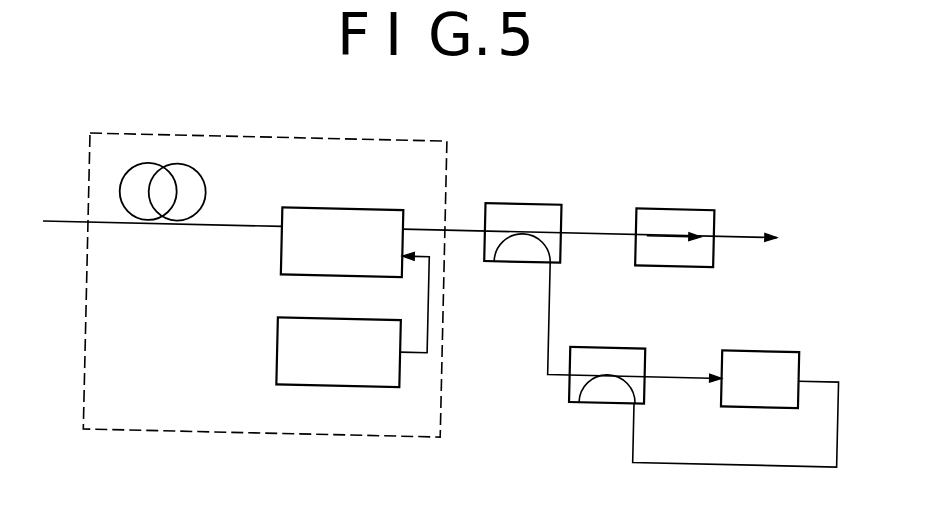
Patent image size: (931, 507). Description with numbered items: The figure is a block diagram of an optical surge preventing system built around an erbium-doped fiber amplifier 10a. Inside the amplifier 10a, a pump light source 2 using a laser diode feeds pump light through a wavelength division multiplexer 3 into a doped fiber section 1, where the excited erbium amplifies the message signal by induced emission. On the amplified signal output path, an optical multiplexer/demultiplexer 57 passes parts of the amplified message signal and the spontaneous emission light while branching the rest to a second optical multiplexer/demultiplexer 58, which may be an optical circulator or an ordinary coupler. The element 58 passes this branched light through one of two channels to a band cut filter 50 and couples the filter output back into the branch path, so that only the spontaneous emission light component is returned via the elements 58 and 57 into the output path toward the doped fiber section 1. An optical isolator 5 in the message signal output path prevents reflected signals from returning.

The doped fiber section 1 is at (204, 176).
The pump light source 2 is at (278, 335).
The wavelength division multiplexer 3 is at (383, 201).
The optical isolator 5 is at (668, 194).
The rare earth-doped fiber amplifier 10a is at (446, 398).
The optical multiplexer/demultiplexer 57 is at (529, 192).
The optical multiplexer/demultiplexer 58 is at (612, 334).
The band cut filter 50 is at (762, 334).